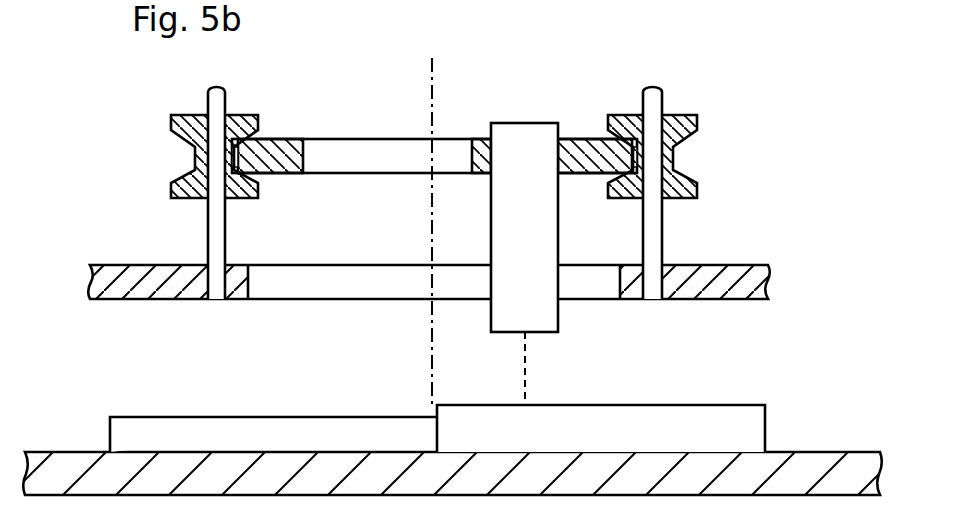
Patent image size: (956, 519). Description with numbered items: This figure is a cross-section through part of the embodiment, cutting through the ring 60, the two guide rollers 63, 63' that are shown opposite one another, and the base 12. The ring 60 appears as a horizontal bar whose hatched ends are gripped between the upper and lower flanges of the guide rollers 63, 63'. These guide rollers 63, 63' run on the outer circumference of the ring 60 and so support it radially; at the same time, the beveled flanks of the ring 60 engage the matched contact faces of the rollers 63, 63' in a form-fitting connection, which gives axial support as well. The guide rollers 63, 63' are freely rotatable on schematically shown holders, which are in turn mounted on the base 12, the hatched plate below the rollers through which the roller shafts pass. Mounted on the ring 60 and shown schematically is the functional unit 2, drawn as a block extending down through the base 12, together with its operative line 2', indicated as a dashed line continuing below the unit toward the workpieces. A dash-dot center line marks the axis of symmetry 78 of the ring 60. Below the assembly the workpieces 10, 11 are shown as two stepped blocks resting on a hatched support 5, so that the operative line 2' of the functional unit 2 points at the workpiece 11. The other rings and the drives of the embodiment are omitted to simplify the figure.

The functional unit 2 is at (522, 196).
The operative line 2' is at (554, 368).
The base plate 5 is at (826, 470).
The workpiece 10 is at (277, 436).
The workpiece 11 is at (659, 420).
The base 12 is at (716, 278).
The ring 60 is at (590, 150).
The guide roller 63 is at (195, 129).
The guide roller 63' is at (680, 130).
The axis of symmetry 78 is at (428, 77).